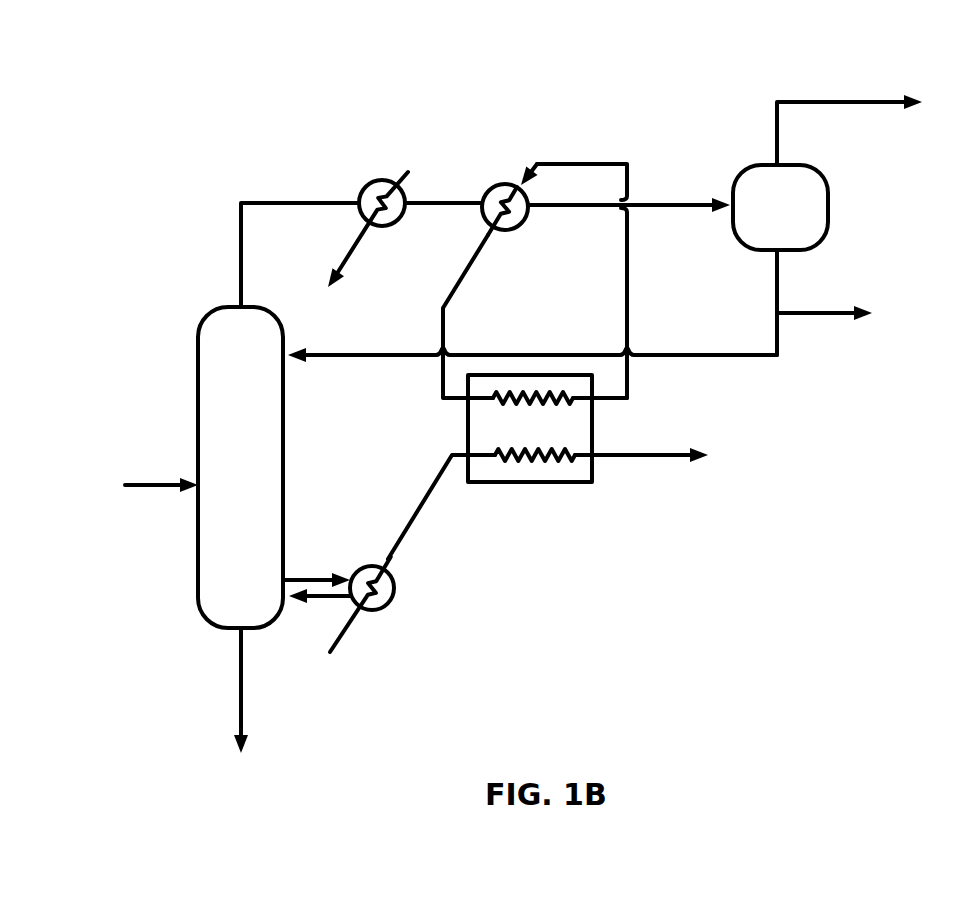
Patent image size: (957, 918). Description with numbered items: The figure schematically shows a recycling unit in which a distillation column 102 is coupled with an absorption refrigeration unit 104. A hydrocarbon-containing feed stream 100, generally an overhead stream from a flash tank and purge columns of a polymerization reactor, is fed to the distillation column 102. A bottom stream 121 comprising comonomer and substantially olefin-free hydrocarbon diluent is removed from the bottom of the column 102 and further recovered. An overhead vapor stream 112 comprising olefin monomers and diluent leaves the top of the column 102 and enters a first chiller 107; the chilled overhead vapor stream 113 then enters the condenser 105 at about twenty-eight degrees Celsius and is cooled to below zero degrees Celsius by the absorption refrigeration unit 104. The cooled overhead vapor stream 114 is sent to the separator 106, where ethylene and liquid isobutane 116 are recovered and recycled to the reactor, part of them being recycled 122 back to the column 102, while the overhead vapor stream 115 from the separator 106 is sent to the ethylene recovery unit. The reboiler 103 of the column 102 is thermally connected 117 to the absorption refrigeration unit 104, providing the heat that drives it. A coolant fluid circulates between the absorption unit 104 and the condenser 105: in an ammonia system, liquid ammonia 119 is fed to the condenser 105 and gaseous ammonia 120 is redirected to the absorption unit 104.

The hydrocarbon-containing feed stream 100 is at (165, 485).
The distillation column 102 is at (268, 468).
The reboiler 103 is at (390, 590).
The absorption refrigeration unit 104 is at (565, 423).
The condenser 105 is at (507, 188).
The separator 106 is at (813, 220).
The first chiller 107 is at (373, 190).
The overhead vapor stream 112 is at (300, 203).
The chilled overhead vapor stream 113 is at (420, 203).
The cooled overhead vapor stream 114 is at (650, 203).
The overhead vapor stream from the separator 115 is at (818, 102).
The ethylene and liquid isobutane 116 is at (808, 315).
The thermal connection 117 is at (423, 506).
The liquid ammonia 119 is at (628, 287).
The gaseous ammonia 120 is at (453, 290).
The bottom stream 121 is at (240, 680).
The partly recycled stream 122 is at (365, 355).